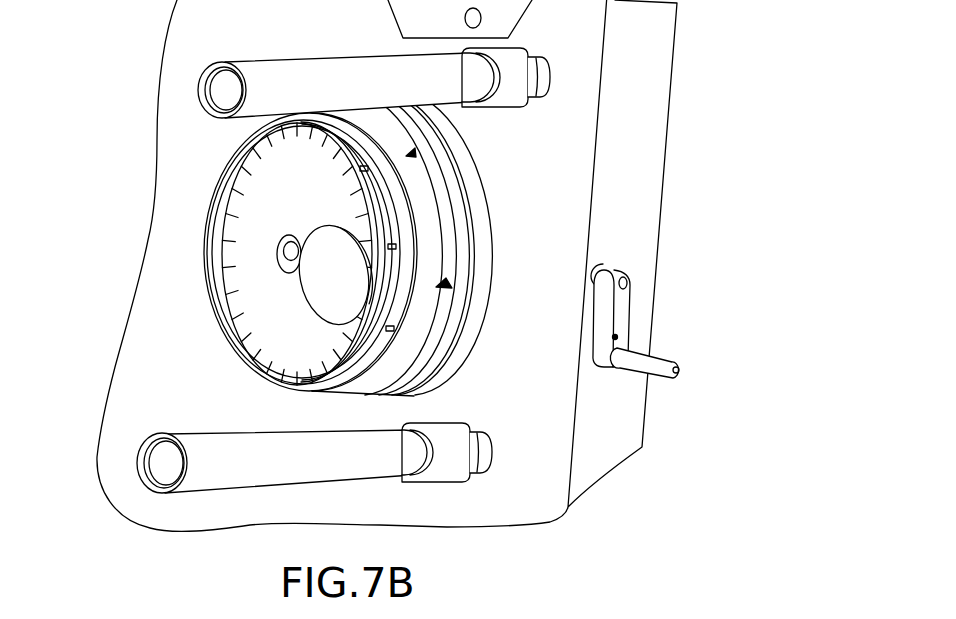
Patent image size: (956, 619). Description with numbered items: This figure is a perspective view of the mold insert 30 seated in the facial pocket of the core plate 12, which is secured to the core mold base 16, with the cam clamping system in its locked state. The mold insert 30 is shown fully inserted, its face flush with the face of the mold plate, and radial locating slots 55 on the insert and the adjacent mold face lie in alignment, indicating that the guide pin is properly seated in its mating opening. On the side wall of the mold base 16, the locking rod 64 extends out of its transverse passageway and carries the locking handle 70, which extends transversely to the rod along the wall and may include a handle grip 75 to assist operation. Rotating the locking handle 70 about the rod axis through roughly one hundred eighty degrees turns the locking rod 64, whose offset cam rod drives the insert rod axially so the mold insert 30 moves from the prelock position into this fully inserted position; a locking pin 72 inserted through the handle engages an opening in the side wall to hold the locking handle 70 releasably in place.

The core plate 12 is at (224, 199).
The core mold base 16 is at (533, 133).
The mold insert 30 is at (335, 274).
The radial locating slots 55 is at (241, 158).
The locking rod 64 is at (604, 268).
The locking handle 70 is at (617, 308).
The locking pin 72 is at (617, 337).
The handle grip 75 is at (681, 370).